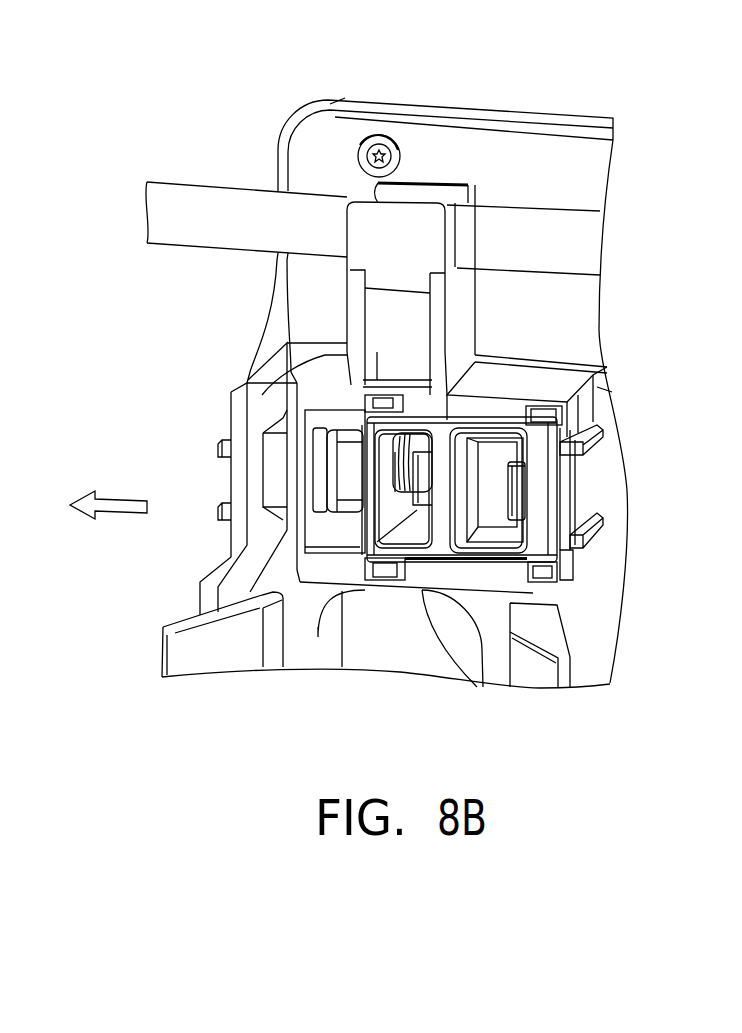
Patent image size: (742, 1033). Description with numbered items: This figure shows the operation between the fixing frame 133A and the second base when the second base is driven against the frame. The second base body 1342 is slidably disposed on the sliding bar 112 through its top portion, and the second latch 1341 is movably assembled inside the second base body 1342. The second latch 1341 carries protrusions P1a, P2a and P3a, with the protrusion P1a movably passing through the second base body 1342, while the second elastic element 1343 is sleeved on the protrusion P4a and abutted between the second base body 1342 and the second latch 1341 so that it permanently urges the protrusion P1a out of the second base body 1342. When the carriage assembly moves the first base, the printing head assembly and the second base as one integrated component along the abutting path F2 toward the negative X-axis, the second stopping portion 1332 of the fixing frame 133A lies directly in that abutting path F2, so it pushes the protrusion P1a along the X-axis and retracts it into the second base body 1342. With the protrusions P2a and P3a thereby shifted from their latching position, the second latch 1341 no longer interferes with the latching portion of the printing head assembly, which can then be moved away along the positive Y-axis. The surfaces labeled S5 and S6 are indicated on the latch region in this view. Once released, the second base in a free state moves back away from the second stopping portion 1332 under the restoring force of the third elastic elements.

The fixing frame 133A is at (474, 112).
The sliding bar 112 is at (192, 232).
The second stopping portion 1332 is at (273, 470).
The second latch 1341 is at (440, 473).
The second base body 1342 is at (570, 380).
The second elastic element 1343 is at (422, 437).
The protrusion P1a is at (350, 443).
The protrusion P2a is at (428, 500).
The protrusion P3a is at (517, 491).
The protrusion P4a is at (402, 445).
The fifth surface S5 is at (415, 513).
The sixth surface S6 is at (507, 513).
The abutting path F2 is at (92, 505).